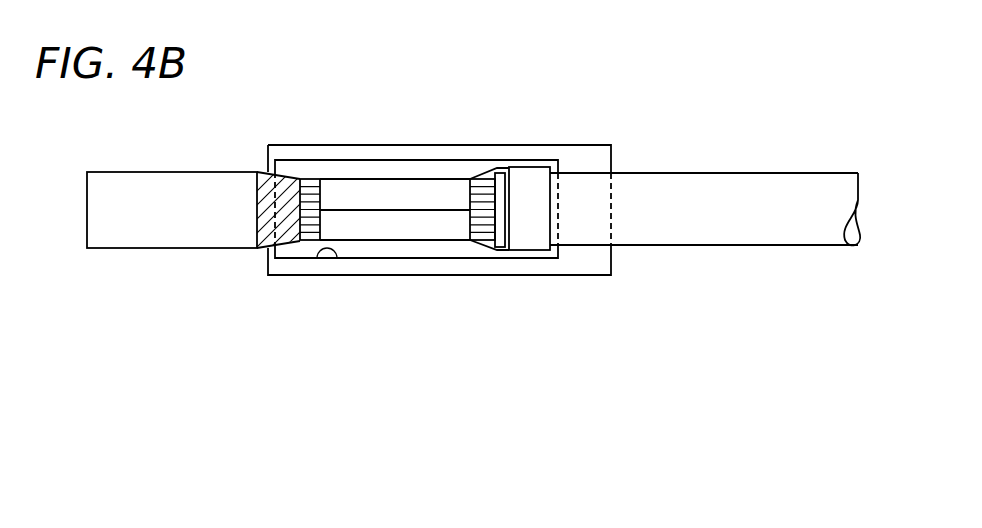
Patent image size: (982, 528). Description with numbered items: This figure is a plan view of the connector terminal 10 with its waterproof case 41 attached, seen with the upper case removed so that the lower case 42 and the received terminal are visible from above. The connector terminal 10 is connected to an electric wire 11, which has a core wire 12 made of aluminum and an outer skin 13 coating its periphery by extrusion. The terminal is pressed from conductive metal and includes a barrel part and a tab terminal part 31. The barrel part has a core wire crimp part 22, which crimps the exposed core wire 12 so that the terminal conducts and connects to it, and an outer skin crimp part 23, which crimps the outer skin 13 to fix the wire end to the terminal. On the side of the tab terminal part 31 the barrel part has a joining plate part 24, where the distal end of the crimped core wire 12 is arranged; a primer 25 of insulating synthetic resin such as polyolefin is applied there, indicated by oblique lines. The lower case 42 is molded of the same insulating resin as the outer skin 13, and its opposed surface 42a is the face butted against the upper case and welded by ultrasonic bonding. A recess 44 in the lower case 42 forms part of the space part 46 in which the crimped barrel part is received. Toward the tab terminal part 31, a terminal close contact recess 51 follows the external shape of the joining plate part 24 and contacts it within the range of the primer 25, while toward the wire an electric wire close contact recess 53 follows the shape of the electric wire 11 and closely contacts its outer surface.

The connector terminal 10 is at (250, 280).
The electric wire 11 is at (816, 166).
The core wire 12 is at (482, 236).
The outer skin 13 is at (771, 235).
The core wire crimp part 22 is at (368, 238).
The outer skin crimp part 23 is at (530, 242).
The joining plate part 24 is at (290, 245).
The primer 25 is at (257, 212).
The tab terminal part 31 is at (130, 268).
The waterproof case 41 is at (562, 285).
The lower case 42 is at (504, 263).
The opposed surface 42a is at (593, 155).
The recess 44 is at (315, 258).
The space part 46 is at (427, 250).
The terminal close contact recess 51 is at (257, 230).
The electric wire close contact recess 53 is at (598, 245).